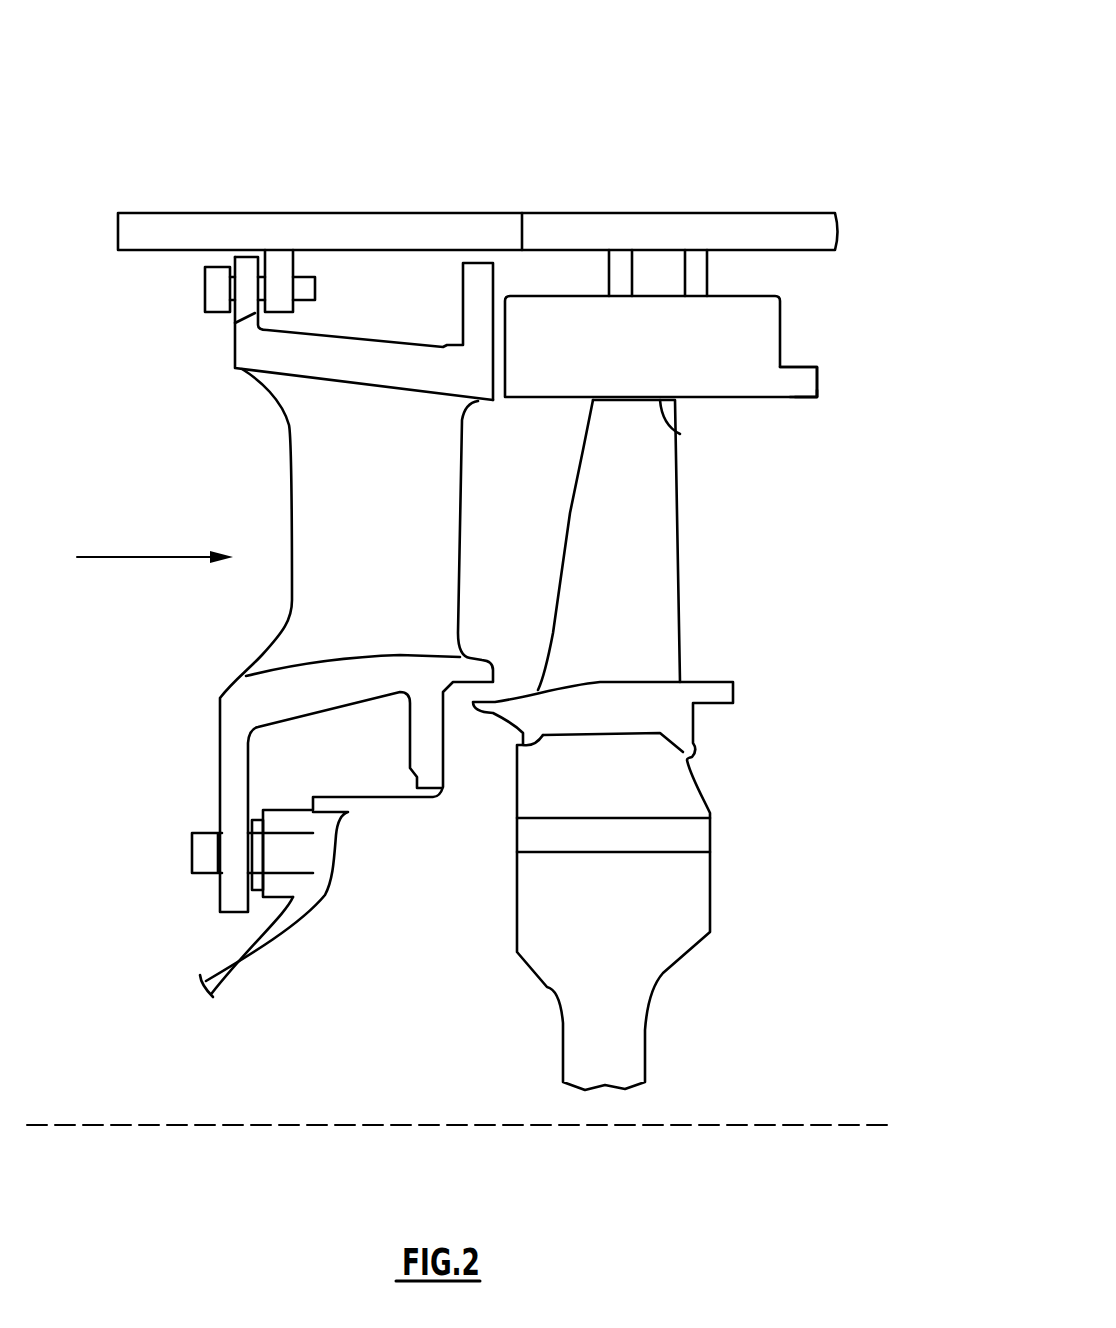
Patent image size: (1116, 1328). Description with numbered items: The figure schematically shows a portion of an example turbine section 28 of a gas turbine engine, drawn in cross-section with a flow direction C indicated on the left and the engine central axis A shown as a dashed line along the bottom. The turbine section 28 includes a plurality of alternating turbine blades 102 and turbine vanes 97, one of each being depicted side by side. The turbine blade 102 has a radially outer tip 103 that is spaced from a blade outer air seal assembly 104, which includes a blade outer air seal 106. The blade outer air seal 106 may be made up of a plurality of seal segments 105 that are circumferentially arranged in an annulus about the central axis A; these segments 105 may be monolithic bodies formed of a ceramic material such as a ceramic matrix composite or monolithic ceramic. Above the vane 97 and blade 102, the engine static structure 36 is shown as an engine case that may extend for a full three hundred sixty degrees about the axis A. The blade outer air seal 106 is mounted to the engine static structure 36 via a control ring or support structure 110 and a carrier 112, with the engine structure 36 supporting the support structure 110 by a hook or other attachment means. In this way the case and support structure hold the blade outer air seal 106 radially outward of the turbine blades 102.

The turbine section 28 is at (765, 95).
The engine static structure 36 is at (183, 232).
The turbine vane 97 is at (465, 375).
The turbine blade 102 is at (665, 518).
The radially outer tip 103 is at (680, 434).
The blade outer air seal assembly 104 is at (834, 313).
The seal segment 105 is at (803, 373).
The blade outer air seal 106 is at (800, 387).
The support structure 110 is at (565, 227).
The carrier 112 is at (622, 273).
The core flow path C is at (108, 557).
The central axis A is at (793, 1125).